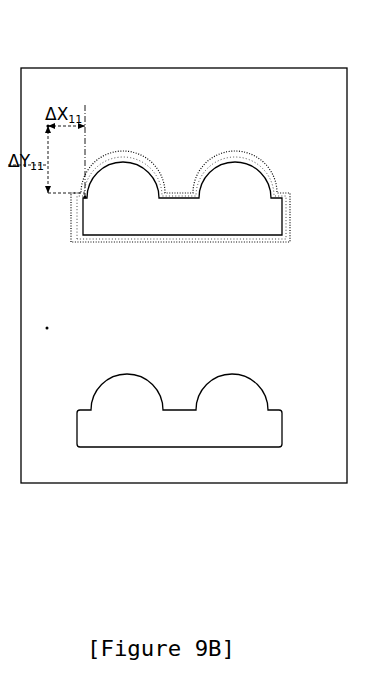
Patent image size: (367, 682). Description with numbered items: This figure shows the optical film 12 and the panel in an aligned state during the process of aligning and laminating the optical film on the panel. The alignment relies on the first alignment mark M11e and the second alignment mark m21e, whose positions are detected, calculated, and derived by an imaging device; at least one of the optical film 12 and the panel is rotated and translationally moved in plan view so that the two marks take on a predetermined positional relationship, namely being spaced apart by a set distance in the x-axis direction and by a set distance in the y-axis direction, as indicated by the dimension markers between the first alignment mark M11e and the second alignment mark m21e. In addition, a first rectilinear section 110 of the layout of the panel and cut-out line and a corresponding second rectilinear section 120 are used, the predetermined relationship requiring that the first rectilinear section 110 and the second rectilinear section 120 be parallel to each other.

The optical film 12 is at (256, 67).
The first rectilinear section 110 is at (147, 242).
The second rectilinear section 120 is at (133, 235).
The first alignment mark M11e is at (48, 126).
The second alignment mark m21e is at (85, 197).